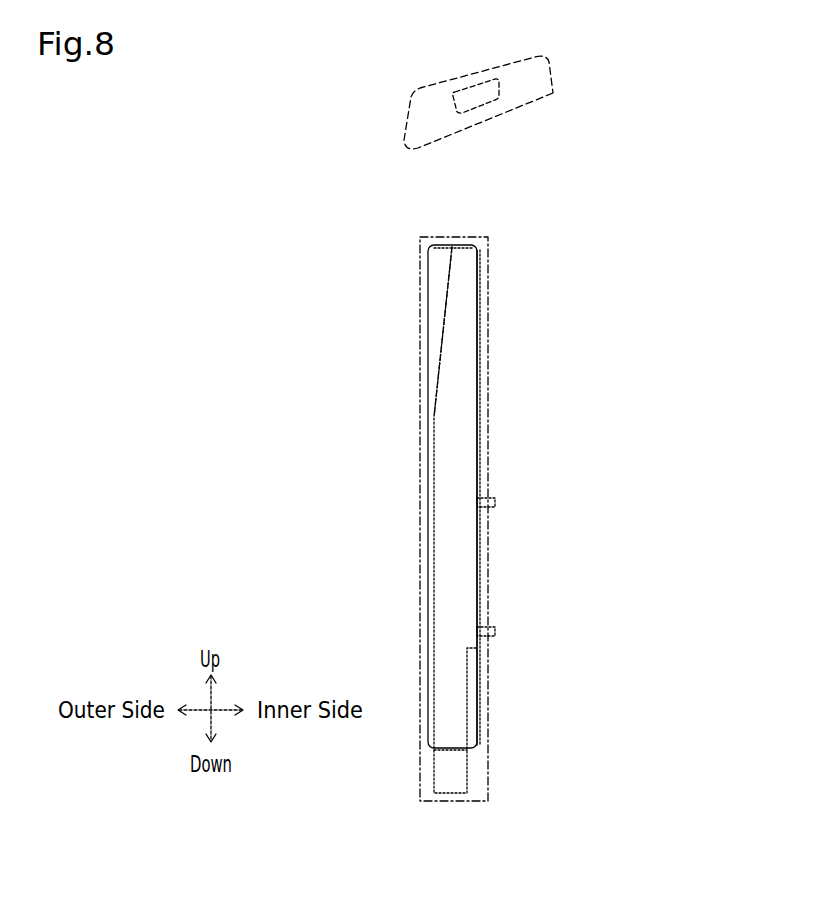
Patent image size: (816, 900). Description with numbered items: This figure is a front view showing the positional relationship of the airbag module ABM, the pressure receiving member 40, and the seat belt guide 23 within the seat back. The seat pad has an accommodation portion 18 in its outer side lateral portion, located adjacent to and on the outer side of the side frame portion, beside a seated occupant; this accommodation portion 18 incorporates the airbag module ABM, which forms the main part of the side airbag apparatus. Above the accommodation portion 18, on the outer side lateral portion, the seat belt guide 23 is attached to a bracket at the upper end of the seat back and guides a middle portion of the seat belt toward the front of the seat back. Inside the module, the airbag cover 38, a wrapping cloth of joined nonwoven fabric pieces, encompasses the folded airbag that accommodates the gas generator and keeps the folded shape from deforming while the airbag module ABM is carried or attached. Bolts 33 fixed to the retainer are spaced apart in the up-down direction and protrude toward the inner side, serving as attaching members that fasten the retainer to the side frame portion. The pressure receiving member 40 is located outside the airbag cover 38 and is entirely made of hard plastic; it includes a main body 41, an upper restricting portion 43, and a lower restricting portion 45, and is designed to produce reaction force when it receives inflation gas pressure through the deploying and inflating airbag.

The seat belt guide 23 is at (405, 128).
The accommodation portion 18 is at (436, 237).
The airbag module ABM is at (428, 358).
The upper restricting portion 43 is at (451, 290).
The airbag cover 38 is at (460, 433).
The bolt 33 is at (496, 503).
The main body 41 is at (433, 558).
The pressure receiving member 40 is at (384, 496).
The lower restricting portion 45 is at (434, 772).